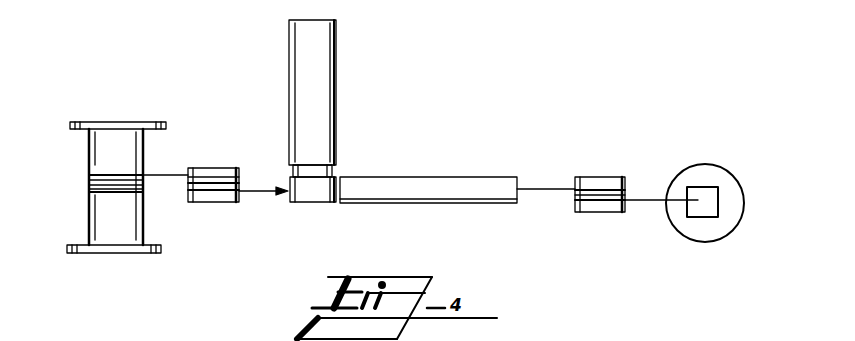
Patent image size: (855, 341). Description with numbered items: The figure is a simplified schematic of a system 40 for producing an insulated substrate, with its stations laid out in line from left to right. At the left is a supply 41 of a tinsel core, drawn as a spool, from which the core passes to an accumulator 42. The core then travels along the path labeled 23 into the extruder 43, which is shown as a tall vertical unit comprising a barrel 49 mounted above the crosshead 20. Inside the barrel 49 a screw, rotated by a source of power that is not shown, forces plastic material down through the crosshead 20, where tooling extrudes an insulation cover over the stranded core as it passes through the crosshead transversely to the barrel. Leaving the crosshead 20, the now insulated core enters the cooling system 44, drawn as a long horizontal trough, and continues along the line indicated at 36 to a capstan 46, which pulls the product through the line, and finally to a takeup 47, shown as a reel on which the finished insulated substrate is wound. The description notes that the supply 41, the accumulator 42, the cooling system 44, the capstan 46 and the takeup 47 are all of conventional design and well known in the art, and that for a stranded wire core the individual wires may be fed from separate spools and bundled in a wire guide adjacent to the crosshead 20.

The crosshead 20 is at (350, 163).
The light beam 23 is at (262, 195).
The optical fiber 36 is at (544, 187).
The system 40 is at (470, 150).
The supply 41 is at (142, 122).
The accumulator 42 is at (214, 168).
The extruder 43 is at (319, 92).
The cooling system 44 is at (457, 203).
The capstan 46 is at (600, 210).
The takeup 47 is at (697, 228).
The barrel 49 is at (295, 52).